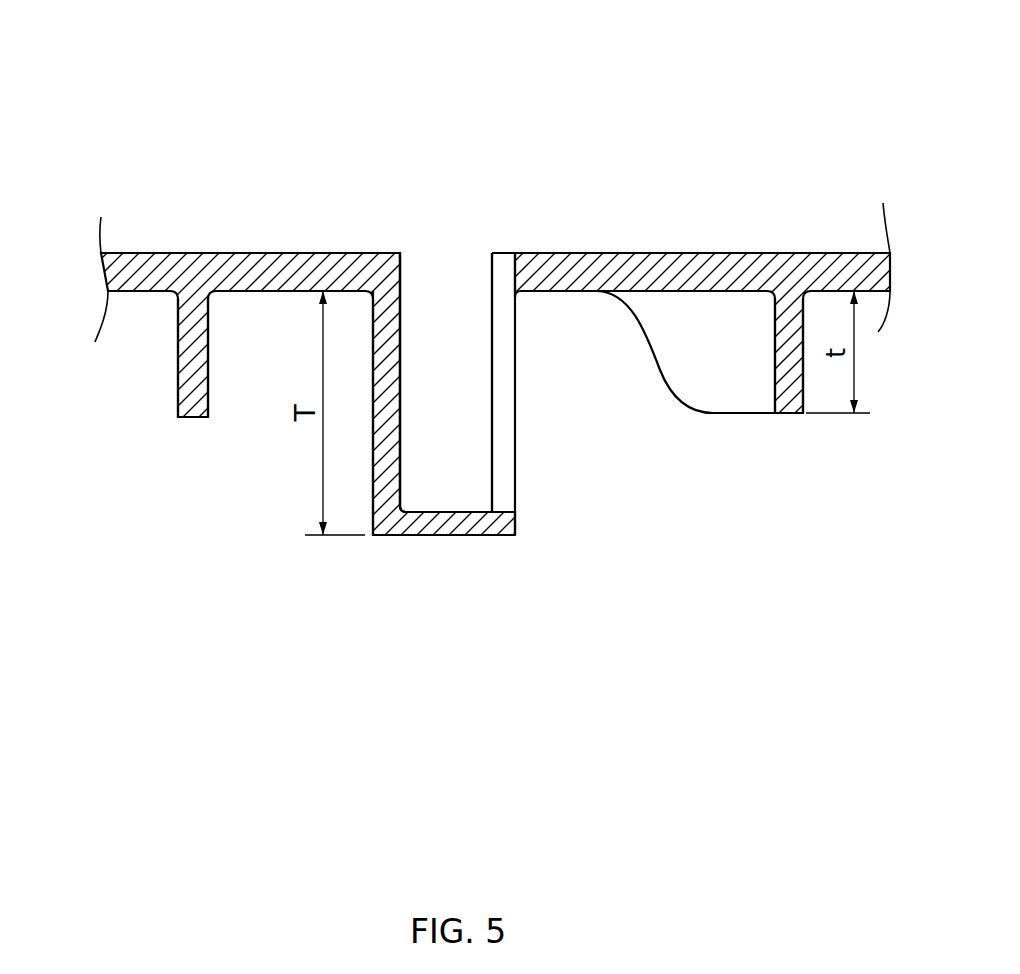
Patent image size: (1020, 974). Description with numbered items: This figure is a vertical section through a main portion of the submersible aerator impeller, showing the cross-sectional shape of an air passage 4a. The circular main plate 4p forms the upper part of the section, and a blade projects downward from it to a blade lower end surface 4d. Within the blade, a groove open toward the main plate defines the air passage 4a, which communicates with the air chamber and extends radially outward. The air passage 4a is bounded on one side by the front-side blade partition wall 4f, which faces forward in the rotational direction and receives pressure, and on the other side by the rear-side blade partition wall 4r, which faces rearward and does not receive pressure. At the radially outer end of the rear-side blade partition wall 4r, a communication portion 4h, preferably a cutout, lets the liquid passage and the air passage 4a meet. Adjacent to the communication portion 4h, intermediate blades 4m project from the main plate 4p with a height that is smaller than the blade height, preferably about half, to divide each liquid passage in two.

The main plate 4p is at (230, 253).
The air passage 4a is at (438, 373).
The front-side blade partition wall 4f is at (375, 405).
The blade lower end surface 4d is at (455, 537).
The communication portion 4h is at (503, 452).
The rear-side blade partition wall 4r is at (517, 365).
The intermediate blade 4m is at (193, 417).